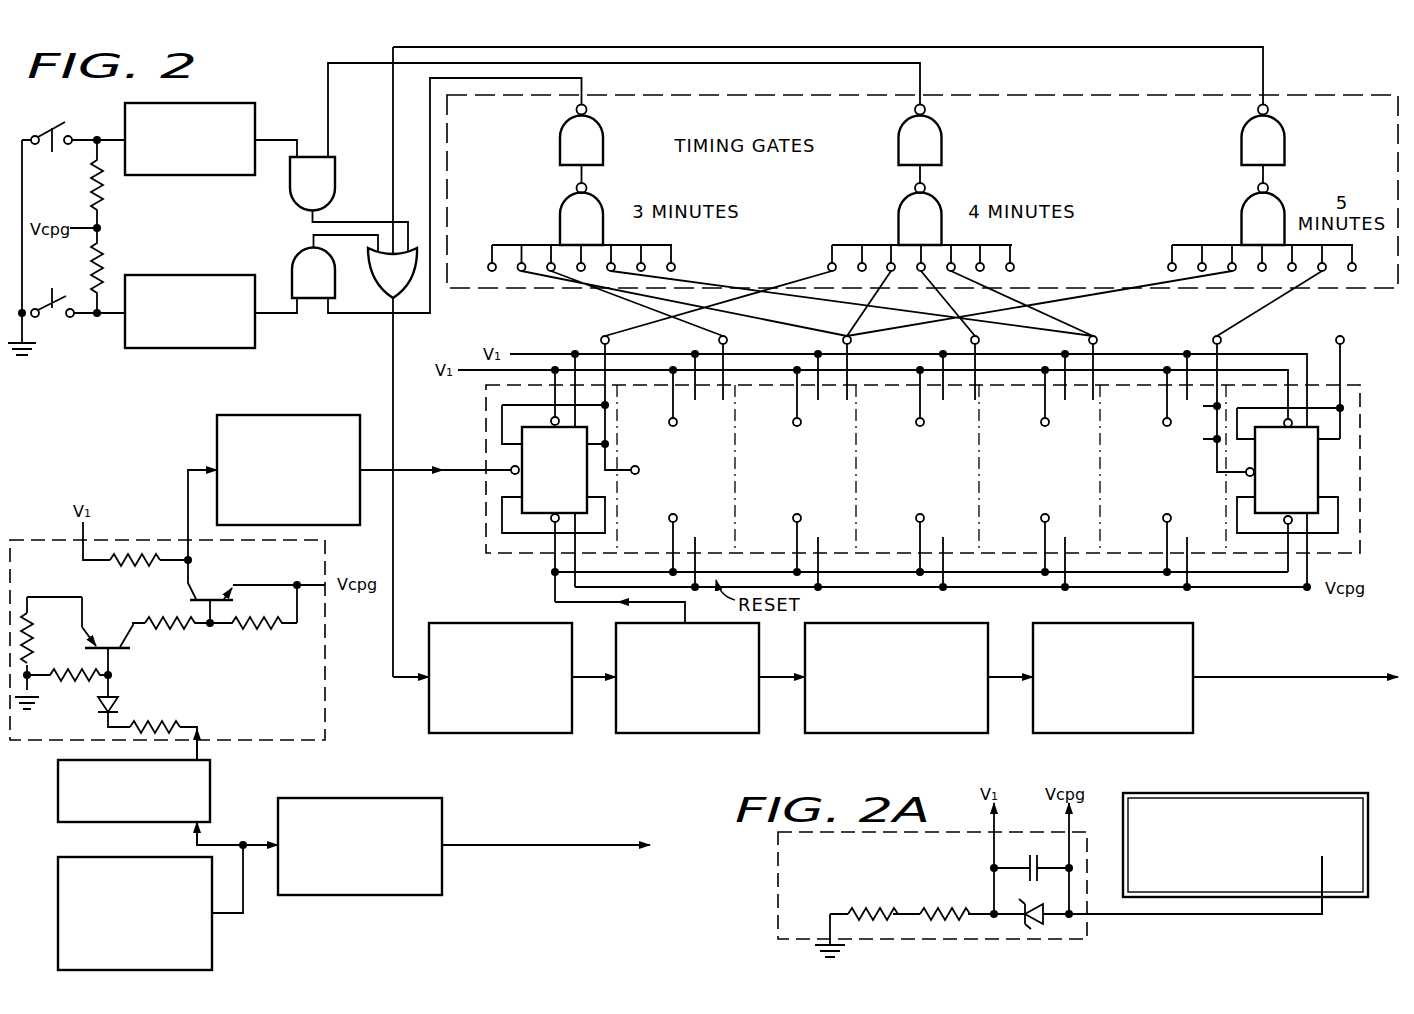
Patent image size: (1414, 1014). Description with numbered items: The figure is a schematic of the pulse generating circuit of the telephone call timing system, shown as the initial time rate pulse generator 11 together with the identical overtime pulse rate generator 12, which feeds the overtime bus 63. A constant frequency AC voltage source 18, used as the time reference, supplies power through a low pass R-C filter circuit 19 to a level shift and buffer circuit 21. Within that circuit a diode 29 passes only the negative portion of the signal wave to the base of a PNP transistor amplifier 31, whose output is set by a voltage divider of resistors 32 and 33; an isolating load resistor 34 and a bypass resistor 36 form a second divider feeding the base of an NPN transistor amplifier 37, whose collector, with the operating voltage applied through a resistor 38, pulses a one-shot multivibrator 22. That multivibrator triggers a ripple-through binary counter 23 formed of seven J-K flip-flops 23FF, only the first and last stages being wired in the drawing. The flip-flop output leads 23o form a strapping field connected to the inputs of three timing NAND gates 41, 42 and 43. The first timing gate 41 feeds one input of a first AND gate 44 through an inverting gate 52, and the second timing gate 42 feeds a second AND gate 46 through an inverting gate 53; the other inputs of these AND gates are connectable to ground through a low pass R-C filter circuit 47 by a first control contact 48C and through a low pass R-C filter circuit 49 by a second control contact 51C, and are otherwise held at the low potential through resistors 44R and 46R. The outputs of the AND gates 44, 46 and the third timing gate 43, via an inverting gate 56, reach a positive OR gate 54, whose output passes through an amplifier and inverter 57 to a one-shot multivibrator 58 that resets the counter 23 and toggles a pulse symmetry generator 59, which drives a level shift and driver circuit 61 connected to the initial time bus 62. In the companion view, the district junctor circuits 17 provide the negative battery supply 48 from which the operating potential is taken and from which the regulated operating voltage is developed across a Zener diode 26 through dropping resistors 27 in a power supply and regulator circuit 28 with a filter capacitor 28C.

In FIG. 2, the second control contact 51C is at (50, 153).
In FIG. 2, the first control contact 48C is at (51, 290).
In FIG. 2, the resistor 44R is at (103, 196).
In FIG. 2, the resistor 46R is at (101, 252).
In FIG. 2, the low pass R-C filter circuit 49 is at (165, 178).
In FIG. 2, the low pass R-C filter circuit 47 is at (200, 275).
In FIG. 2, the second AND gate 46 is at (290, 190).
In FIG. 2, the first AND gate 44 is at (293, 278).
In FIG. 2, the positive OR gate 54 is at (375, 286).
In FIG. 2, the signal inverting gate 52 is at (560, 137).
In FIG. 2, the signal inverting gate 53 is at (899, 128).
In FIG. 2, the inverting gate 56 is at (1241, 139).
In FIG. 2, the first timing gate 41 is at (560, 214).
In FIG. 2, the second timing gate 42 is at (898, 214).
In FIG. 2, the third timing gate 43 is at (1241, 206).
In FIG. 2, the binary counter 23 is at (483, 497).
In FIG. 2, the output leads 23o is at (604, 368).
In FIG. 2, the J-K flip-flops 23FF is at (522, 453).
In FIG. 2, the initial time rate pulse generator 11 is at (300, 373).
In FIG. 2, the one-shot multivibrator 22 is at (335, 526).
In FIG. 2, the level shift and buffer circuit 21 is at (262, 746).
In FIG. 2, the resistor 38 is at (140, 556).
In FIG. 2, the NPN transistor amplifier 37 is at (208, 594).
In FIG. 2, the isolating load resistor 34 is at (156, 620).
In FIG. 2, the bypass resistor 36 is at (246, 622).
In FIG. 2, the PNP transistor amplifier 31 is at (113, 645).
In FIG. 2, the resistor 33 is at (71, 672).
In FIG. 2, the diode 29 is at (98, 705).
In FIG. 2, the resistor 32 is at (146, 722).
In FIG. 2, the low pass R-C filter circuit 19 is at (210, 777).
In FIG. 2, the AC voltage source 18 is at (212, 947).
In FIG. 2, the overtime pulse rate generator 12 is at (367, 898).
In FIG. 2, the overtime bus 63 is at (458, 850).
In FIG. 2, the amplifier and inverter 57 is at (472, 734).
In FIG. 2, the one-shot multivibrator 58 is at (667, 734).
In FIG. 2, the pulse symmetry generator 59 is at (880, 734).
In FIG. 2, the level shift and driver circuit 61 is at (1085, 734).
In FIG. 2, the initial time bus 62 is at (1216, 680).
In FIG. 2A, the power supply and regulator circuit 28 is at (776, 866).
In FIG. 2A, the power supply filter capacitor 28C is at (1026, 862).
In FIG. 2A, the dropping resistors 27 is at (940, 918).
In FIG. 2A, the Zener diode 26 is at (1046, 919).
In FIG. 2A, the district junctor circuits 17 is at (1256, 794).
In FIG. 2A, the -48 volt supply line 48 is at (1309, 874).